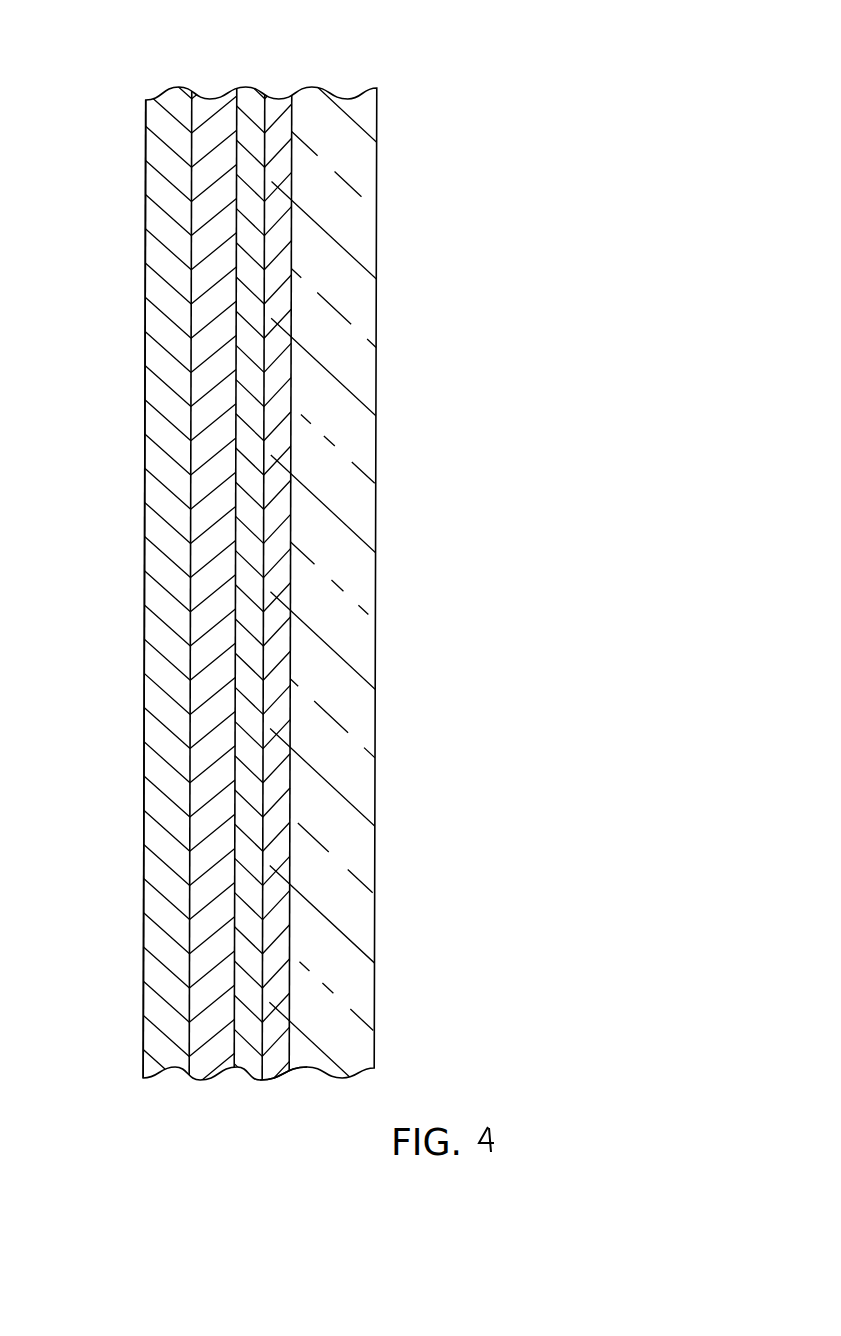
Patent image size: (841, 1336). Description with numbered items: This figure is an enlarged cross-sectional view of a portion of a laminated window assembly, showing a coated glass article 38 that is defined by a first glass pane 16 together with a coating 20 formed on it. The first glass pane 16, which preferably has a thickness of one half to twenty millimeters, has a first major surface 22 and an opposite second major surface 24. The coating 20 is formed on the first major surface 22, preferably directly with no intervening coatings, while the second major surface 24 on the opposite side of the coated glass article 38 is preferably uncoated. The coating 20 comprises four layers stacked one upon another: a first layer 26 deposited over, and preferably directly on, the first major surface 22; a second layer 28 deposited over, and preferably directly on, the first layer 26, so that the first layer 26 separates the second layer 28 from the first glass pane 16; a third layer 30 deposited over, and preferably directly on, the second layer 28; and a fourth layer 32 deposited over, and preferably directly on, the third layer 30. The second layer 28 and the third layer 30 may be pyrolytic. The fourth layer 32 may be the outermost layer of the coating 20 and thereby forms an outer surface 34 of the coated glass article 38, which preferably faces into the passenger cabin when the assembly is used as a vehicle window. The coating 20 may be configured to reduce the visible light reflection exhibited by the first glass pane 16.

The first glass pane 16 is at (322, 1077).
The coating 20 is at (286, 1088).
The first major surface 22 is at (292, 200).
The second major surface 24 is at (377, 275).
The first layer 26 is at (277, 98).
The second layer 28 is at (250, 88).
The third layer 30 is at (208, 98).
The fourth layer 32 is at (170, 88).
The outer surface 34 is at (145, 528).
The coated glass article 38 is at (133, 1173).